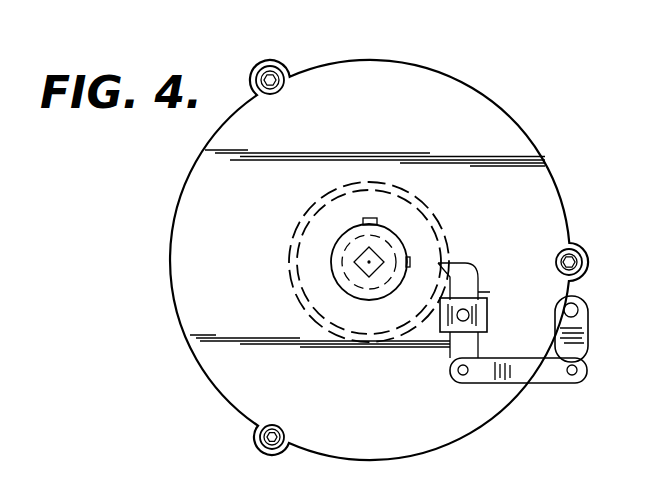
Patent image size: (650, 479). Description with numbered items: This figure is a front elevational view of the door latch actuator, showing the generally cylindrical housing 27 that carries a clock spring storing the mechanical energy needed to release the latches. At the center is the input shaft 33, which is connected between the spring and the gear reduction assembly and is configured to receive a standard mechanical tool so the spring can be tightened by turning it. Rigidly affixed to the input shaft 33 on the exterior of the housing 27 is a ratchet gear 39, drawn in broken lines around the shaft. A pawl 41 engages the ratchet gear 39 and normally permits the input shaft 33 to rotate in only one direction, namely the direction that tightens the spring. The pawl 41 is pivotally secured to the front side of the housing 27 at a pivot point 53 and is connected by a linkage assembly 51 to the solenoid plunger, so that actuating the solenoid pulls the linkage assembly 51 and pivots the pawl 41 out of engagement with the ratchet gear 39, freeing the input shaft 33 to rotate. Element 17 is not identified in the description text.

The cover plate 17 is at (517, 47).
The housing 27 is at (560, 193).
The ratchet gear 39 is at (437, 208).
The input shaft 33 is at (380, 252).
The pawl 41 is at (466, 263).
The pivot point 53 is at (440, 346).
The linkage assembly 51 is at (588, 368).